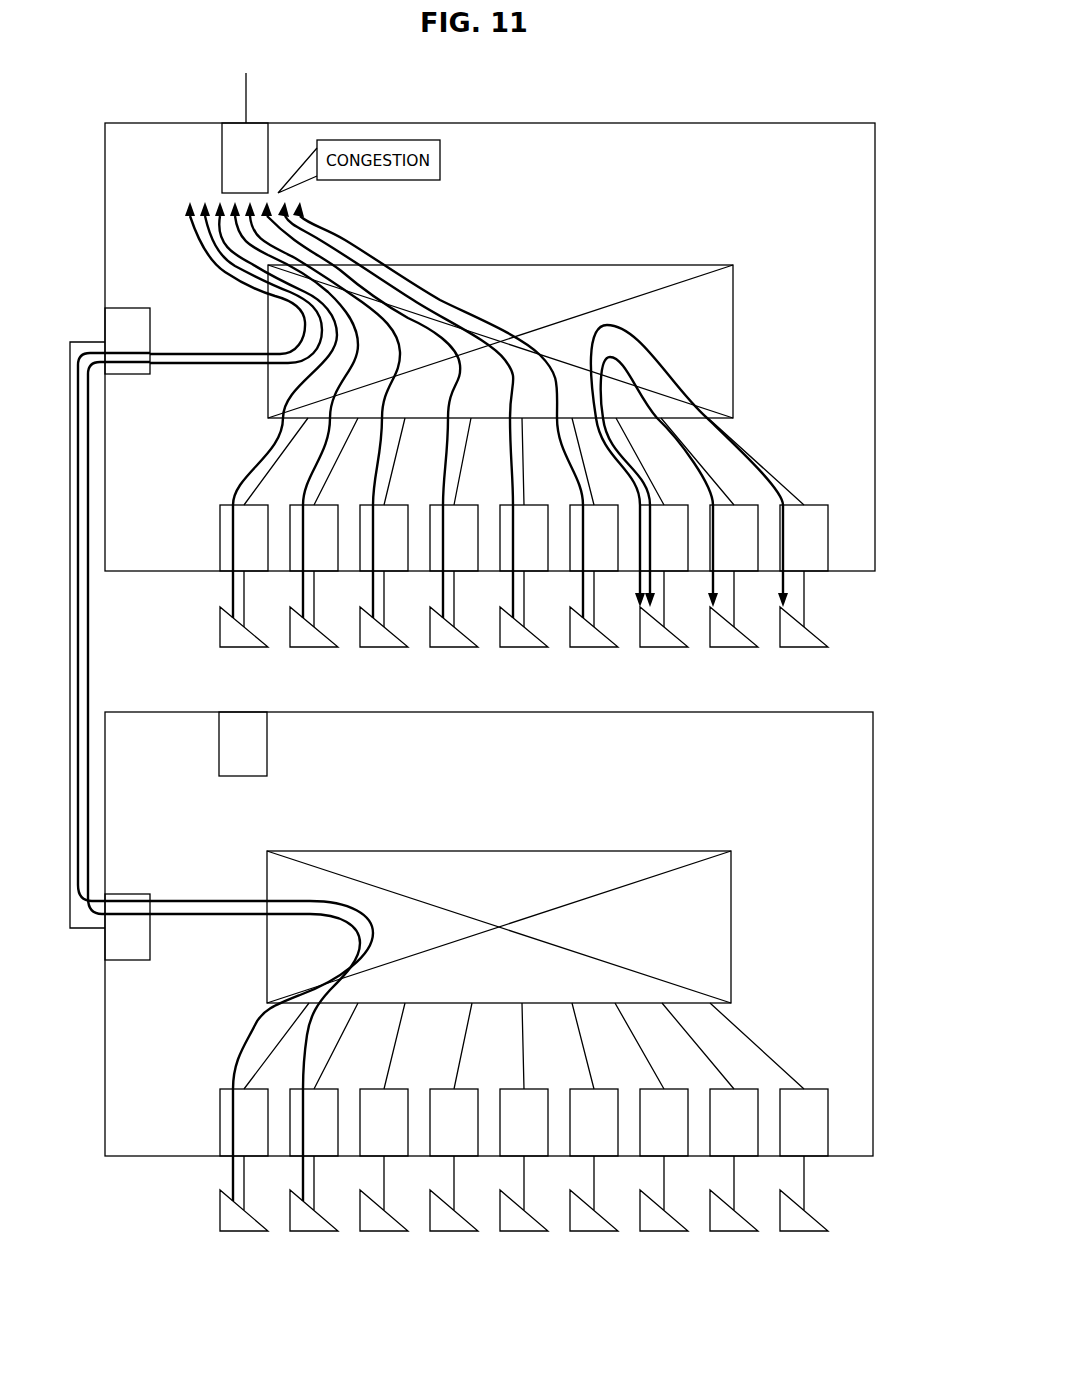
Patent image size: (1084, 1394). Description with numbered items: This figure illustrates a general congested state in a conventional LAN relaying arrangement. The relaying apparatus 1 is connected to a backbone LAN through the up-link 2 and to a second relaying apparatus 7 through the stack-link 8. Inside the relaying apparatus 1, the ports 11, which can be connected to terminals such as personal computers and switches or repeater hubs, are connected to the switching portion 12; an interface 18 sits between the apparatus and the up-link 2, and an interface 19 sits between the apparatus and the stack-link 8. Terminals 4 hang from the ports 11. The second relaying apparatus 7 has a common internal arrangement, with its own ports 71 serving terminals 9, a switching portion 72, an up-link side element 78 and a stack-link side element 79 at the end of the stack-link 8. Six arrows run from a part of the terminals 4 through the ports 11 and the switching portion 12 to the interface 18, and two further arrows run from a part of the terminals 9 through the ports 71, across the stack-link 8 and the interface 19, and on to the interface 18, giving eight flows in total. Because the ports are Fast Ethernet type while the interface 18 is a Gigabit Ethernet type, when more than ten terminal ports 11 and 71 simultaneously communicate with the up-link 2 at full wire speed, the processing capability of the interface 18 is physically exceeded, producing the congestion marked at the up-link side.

The relaying apparatus 1 is at (727, 124).
The up-link 2 is at (246, 90).
The terminals 4 is at (828, 625).
The second relaying apparatus 7 is at (727, 712).
The stack-link 8 is at (70, 342).
The terminals 9 is at (828, 1212).
The ports 11 is at (828, 532).
The switching portion 12 is at (733, 302).
The interface 18 is at (222, 185).
The interface 19 is at (150, 318).
The ports 71 is at (828, 1105).
The switch of second node 72 is at (731, 893).
The upstream port of second node 78 is at (267, 750).
The link port of second node 79 is at (150, 958).